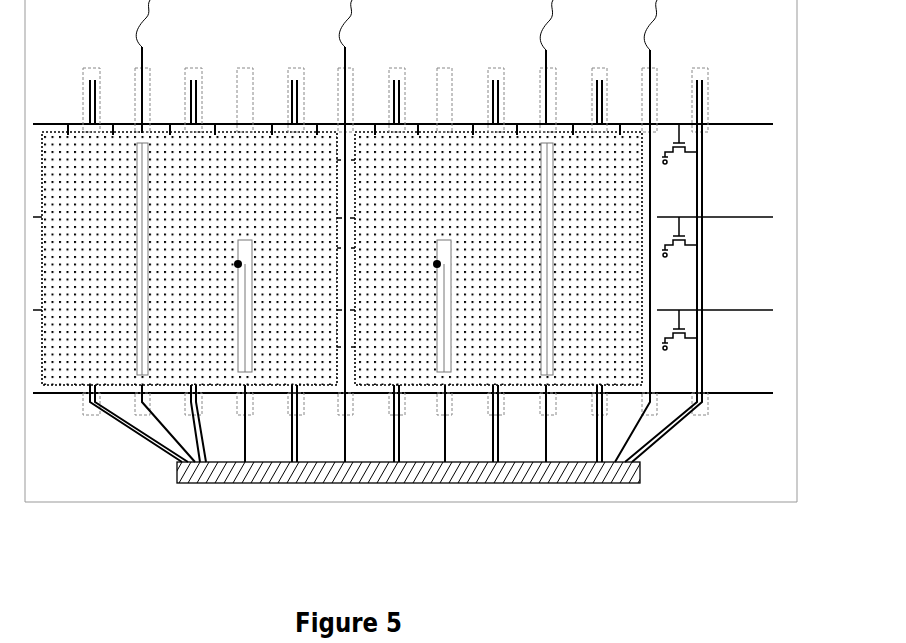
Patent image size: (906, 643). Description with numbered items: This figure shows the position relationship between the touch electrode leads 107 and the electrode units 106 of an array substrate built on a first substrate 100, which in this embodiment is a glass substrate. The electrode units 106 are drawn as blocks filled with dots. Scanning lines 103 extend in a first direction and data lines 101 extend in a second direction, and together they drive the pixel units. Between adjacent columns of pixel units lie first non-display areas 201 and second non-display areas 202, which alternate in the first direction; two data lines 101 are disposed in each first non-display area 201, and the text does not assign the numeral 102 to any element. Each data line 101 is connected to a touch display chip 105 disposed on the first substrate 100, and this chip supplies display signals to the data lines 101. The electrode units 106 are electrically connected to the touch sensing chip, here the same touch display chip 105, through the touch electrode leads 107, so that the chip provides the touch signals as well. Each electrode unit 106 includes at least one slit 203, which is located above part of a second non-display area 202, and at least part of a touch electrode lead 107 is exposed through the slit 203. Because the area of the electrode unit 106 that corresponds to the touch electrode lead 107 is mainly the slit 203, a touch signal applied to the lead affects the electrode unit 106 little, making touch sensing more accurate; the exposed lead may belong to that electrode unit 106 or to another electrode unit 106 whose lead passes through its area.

The first substrate 100 is at (758, 347).
The data line 101 is at (89, 94).
The second signal line 102 is at (97, 94).
The scanning line 103 is at (746, 125).
The touch display chip 105 is at (516, 484).
The electrode unit 106 is at (638, 188).
The touch electrode lead 107 is at (144, 62).
The first non-display area 201 is at (188, 66).
The second non-display area 202 is at (245, 66).
The slit 203 is at (553, 169).